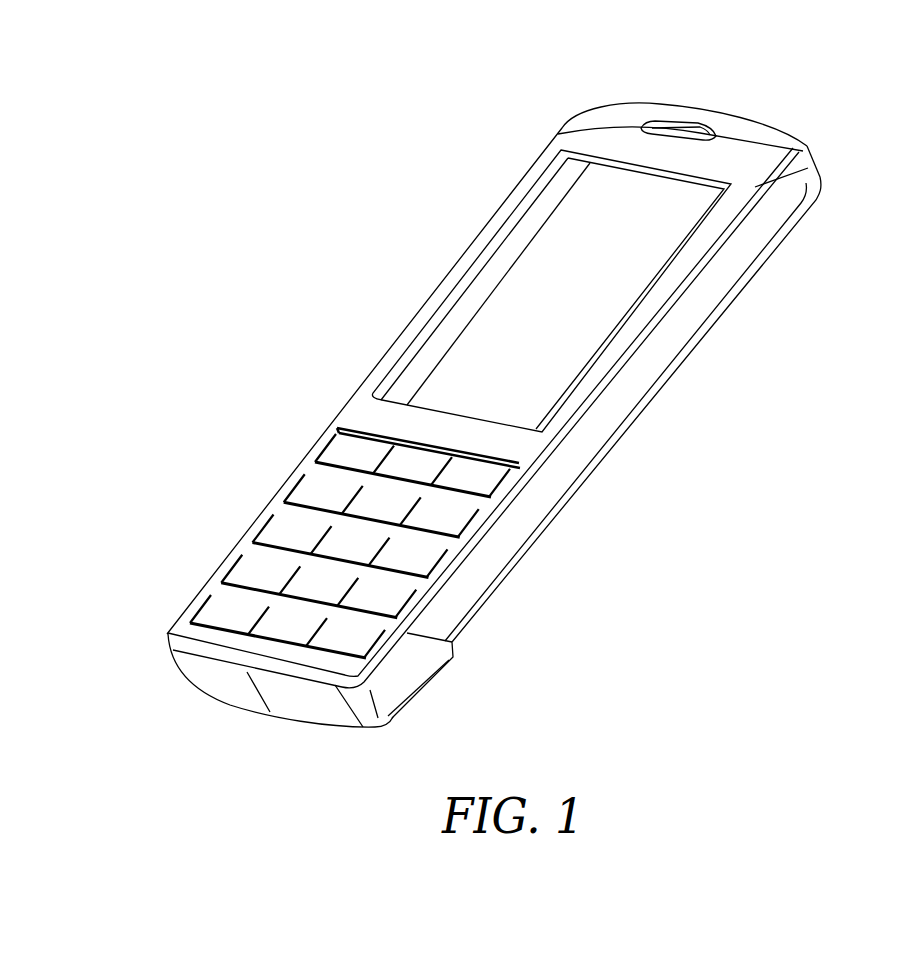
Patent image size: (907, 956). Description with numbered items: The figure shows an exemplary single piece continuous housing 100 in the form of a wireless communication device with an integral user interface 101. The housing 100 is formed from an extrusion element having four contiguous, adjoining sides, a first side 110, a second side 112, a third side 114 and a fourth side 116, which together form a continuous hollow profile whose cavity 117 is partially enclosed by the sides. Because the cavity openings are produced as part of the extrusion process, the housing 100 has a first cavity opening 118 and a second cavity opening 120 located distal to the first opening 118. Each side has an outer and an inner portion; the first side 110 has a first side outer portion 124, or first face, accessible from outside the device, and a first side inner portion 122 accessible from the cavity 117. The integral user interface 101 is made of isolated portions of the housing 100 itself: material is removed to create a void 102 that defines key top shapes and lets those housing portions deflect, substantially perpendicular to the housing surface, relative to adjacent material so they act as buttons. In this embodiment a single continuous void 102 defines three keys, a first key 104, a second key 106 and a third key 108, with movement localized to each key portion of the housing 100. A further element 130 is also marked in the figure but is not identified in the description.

The single piece continuous housing 100 is at (278, 150).
The integral user interface 101 is at (620, 481).
The void 102 is at (293, 493).
The first key 104 is at (303, 497).
The second key 106 is at (370, 507).
The third key 108 is at (433, 520).
The first side 110 is at (403, 333).
The second side 112 is at (822, 183).
The third side 114 is at (688, 366).
The fourth side 116 is at (207, 680).
The cavity 117 is at (625, 385).
The first cavity opening 118 is at (705, 318).
The second cavity opening 120 is at (485, 213).
The first side inner portion 122 is at (735, 212).
The first side outer portion 124 is at (720, 165).
The display 130 is at (627, 260).